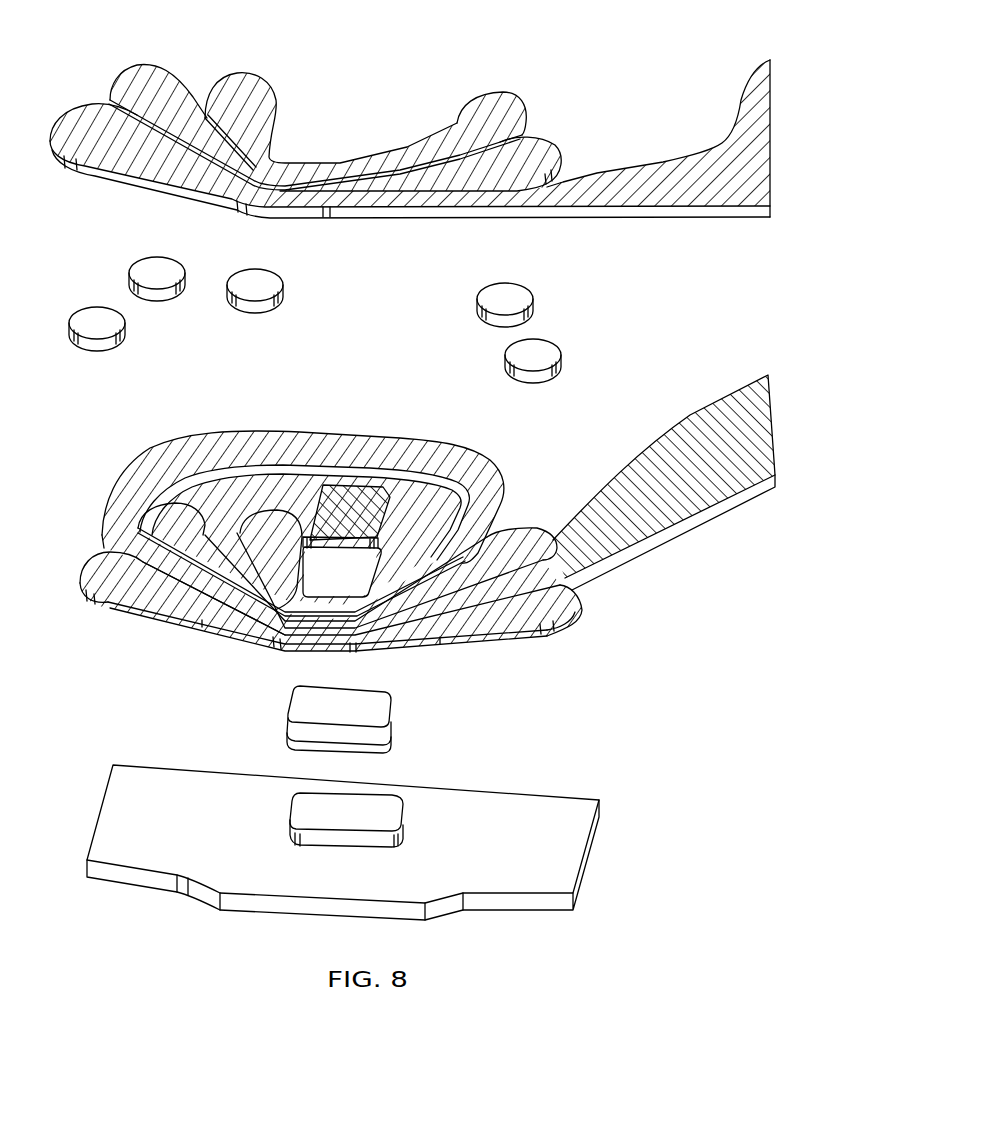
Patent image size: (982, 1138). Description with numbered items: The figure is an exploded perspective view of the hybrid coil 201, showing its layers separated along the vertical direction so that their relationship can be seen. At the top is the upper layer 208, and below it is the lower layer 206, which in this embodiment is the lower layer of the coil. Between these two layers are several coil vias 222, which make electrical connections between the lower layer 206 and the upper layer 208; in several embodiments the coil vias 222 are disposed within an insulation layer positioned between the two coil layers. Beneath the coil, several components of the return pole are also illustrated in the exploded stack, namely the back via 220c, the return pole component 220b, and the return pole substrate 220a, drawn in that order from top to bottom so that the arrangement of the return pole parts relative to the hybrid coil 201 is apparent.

The hybrid coil 201 is at (110, 42).
The upper layer 208 is at (441, 139).
The coil vias 222 is at (605, 253).
The lower layer 206 is at (783, 375).
The back via 220c is at (375, 711).
The return pole component 220b is at (393, 802).
The return pole substrate 220a is at (583, 862).